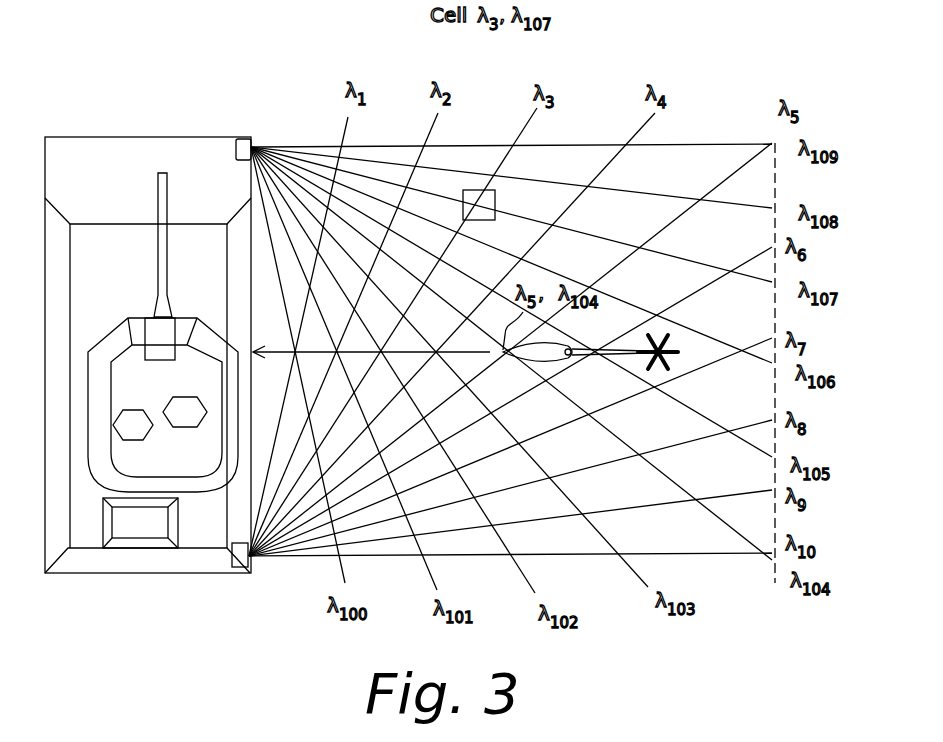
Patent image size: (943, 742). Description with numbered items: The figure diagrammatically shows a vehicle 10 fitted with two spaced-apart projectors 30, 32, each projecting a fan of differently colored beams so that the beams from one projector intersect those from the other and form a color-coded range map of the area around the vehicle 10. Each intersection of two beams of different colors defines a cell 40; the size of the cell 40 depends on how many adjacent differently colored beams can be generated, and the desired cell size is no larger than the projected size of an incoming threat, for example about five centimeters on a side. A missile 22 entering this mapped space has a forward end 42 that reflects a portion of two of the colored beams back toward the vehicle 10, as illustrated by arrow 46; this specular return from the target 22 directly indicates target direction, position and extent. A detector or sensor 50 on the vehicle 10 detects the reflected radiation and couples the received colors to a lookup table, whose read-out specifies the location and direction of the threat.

The vehicle 10 is at (130, 113).
The missile 22 is at (603, 362).
The projector 30 is at (232, 557).
The projector 32 is at (243, 138).
The cell 40 is at (480, 188).
The forward end 42 is at (522, 363).
The arrow 46 is at (326, 349).
The detector or sensor 50 is at (256, 346).